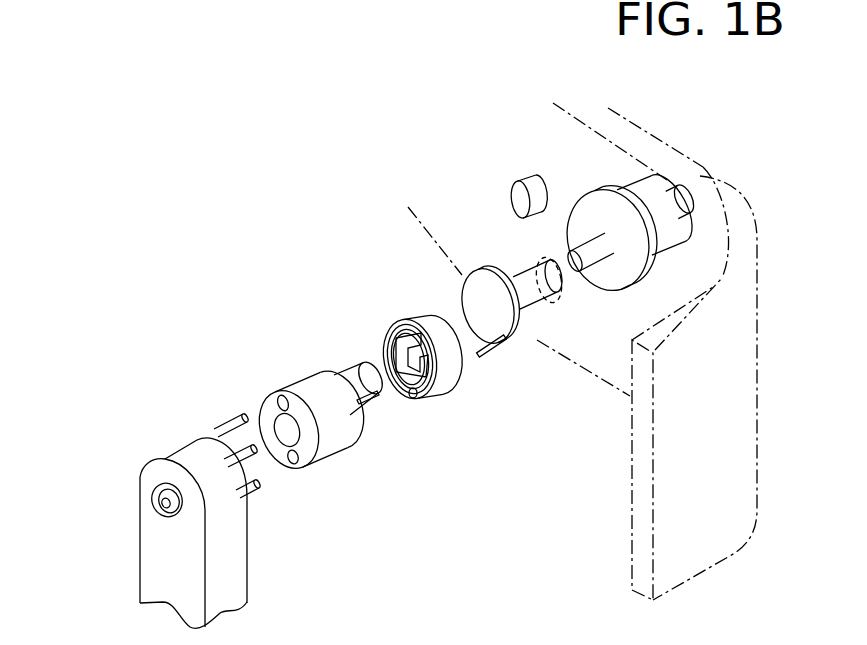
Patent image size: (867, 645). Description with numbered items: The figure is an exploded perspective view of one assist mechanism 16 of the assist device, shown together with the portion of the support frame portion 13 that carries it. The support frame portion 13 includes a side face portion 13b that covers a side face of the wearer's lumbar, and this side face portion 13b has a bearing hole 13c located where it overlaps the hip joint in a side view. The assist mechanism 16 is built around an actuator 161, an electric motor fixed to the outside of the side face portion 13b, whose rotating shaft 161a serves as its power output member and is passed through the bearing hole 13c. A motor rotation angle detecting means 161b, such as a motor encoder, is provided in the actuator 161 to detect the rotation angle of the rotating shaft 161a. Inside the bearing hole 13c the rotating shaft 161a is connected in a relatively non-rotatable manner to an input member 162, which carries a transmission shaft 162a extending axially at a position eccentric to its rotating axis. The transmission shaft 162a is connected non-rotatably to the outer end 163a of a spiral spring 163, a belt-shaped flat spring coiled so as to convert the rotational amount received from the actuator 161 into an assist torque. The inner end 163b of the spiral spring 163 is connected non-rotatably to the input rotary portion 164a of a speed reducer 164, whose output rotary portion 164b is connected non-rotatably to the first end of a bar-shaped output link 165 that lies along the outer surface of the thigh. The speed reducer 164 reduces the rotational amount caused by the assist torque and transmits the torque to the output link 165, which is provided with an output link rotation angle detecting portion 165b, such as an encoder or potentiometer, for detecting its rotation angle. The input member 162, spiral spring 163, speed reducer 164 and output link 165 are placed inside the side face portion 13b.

The support frame portion 13 is at (763, 254).
The side face portion 13b is at (720, 192).
The bearing hole 13c is at (540, 258).
The assist mechanism 16 is at (278, 278).
The actuator 161 is at (655, 197).
The rotating shaft 161a is at (593, 250).
The motor rotation angle detecting means 161b is at (687, 192).
The input member 162 is at (483, 287).
The transmission shaft 162a is at (488, 358).
The spiral spring 163 is at (413, 320).
The outer end 163a is at (414, 400).
The inner end 163b is at (388, 337).
The speed reducer 164 is at (302, 382).
The input rotary portion 164a is at (365, 407).
The output rotary portion 164b is at (327, 447).
The output link 165 is at (155, 548).
The output link rotation angle detecting portion 165b is at (152, 498).